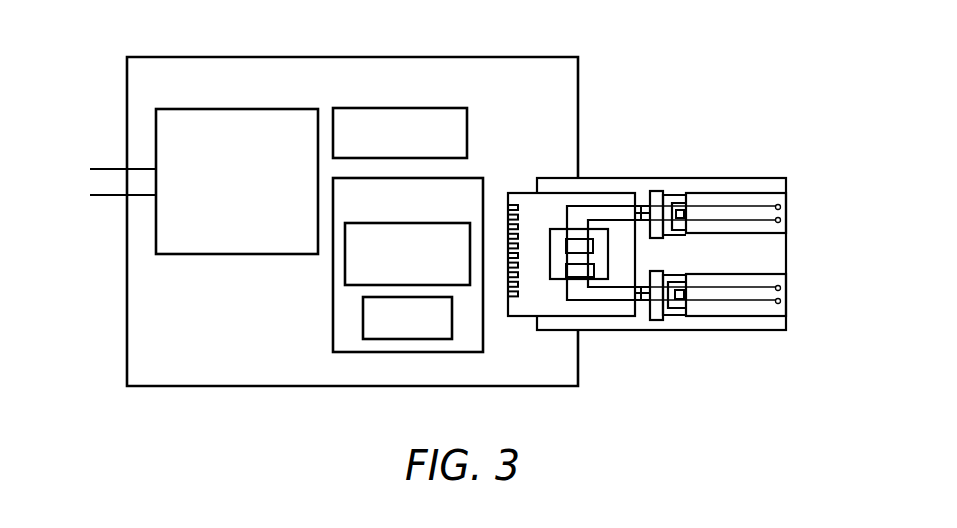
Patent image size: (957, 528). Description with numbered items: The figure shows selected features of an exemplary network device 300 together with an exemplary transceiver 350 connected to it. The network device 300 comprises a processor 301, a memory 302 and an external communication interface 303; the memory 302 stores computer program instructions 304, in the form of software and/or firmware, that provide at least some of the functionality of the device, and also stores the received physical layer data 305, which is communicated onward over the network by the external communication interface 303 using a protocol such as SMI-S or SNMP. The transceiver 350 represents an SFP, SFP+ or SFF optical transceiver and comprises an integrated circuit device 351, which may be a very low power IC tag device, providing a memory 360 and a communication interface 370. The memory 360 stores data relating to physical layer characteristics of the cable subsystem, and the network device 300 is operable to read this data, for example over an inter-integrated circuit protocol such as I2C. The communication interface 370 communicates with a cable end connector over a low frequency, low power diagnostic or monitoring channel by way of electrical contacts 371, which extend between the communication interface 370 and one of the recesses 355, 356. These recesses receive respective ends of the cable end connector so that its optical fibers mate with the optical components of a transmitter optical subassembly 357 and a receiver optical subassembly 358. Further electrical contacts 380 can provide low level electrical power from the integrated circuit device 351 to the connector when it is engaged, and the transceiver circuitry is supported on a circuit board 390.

The network device 300 is at (127, 57).
The processor 301 is at (467, 132).
The memory 302 is at (483, 330).
The external communication interface 303 is at (206, 108).
The computer program instructions 304 is at (345, 275).
The physical layer data 305 is at (363, 316).
The transceiver 350 is at (787, 254).
The integrated circuit device 351 is at (609, 255).
The recess 355 is at (762, 316).
The recess 356 is at (763, 193).
The transmitter optical subassembly 357 is at (660, 190).
The receiver optical subassembly 358 is at (662, 321).
The memory 360 is at (592, 251).
The communication interface 370 is at (594, 272).
The electrical contacts 371 is at (710, 301).
The electrical contacts 380 is at (712, 206).
The circuit board 390 is at (527, 206).